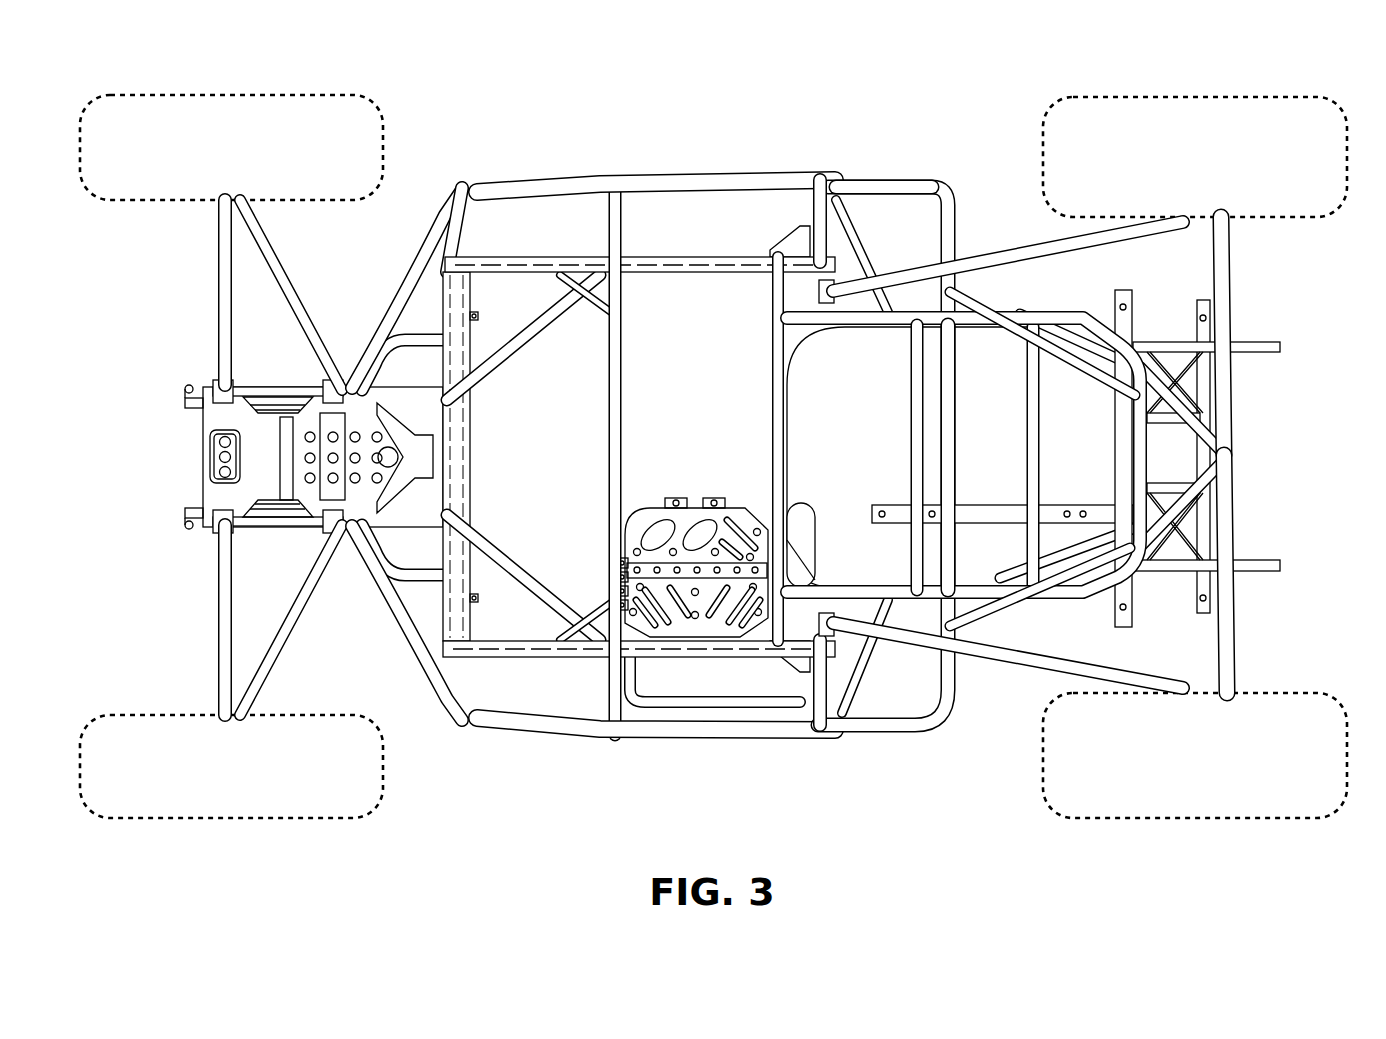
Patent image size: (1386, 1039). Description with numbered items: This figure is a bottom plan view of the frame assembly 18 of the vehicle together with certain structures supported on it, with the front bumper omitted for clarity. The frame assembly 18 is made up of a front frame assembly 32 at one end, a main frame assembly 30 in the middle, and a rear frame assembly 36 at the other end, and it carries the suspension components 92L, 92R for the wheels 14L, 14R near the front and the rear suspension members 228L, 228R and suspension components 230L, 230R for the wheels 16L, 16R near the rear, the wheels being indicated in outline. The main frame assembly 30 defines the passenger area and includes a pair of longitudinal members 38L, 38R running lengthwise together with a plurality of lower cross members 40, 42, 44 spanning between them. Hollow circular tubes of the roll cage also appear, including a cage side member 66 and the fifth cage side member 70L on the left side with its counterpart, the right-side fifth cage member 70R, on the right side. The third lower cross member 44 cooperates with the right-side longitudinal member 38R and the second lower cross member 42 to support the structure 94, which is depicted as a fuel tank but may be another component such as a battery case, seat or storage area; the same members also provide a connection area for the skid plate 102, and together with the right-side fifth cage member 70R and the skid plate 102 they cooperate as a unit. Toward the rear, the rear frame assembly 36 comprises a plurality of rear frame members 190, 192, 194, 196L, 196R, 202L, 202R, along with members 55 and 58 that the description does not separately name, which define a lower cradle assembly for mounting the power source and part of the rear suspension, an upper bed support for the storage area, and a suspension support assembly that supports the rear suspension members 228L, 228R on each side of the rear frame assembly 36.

The wheel 14L is at (383, 147).
The wheel 14R is at (383, 795).
The wheel 16L is at (1308, 95).
The wheel 16R is at (1196, 818).
The frame assembly 18 is at (725, 463).
The main frame assembly 30 is at (739, 472).
The front frame assembly 32 is at (190, 566).
The rear frame assembly 36 is at (1078, 496).
The longitudinal member 38L is at (690, 272).
The right-side longitudinal member 38R is at (552, 658).
The lower cross member 40 is at (478, 238).
The second lower cross member 42 is at (790, 450).
The third lower cross member 44 is at (622, 437).
The rear upright tube 55 is at (925, 363).
The rear cab hoop 58 is at (947, 700).
The cage side member 66 is at (870, 180).
The fifth cage side member 70L is at (740, 177).
The right-side fifth cage member 70R is at (735, 738).
The suspension component 92L is at (218, 298).
The suspension component 92R is at (220, 665).
The structure 94 is at (813, 520).
The skid plate 102 is at (692, 510).
The rear frame member 190 is at (1068, 313).
The rear frame member 192 is at (958, 487).
The rear frame member 194 is at (1036, 425).
The rear frame member 196L is at (1283, 345).
The rear frame member 196R is at (1283, 566).
The rear frame member 202L is at (980, 293).
The rear frame member 202R is at (995, 612).
The rear suspension member 228L is at (998, 255).
The rear suspension member 228R is at (1045, 680).
The suspension component 230L is at (1240, 268).
The suspension component 230R is at (1236, 660).